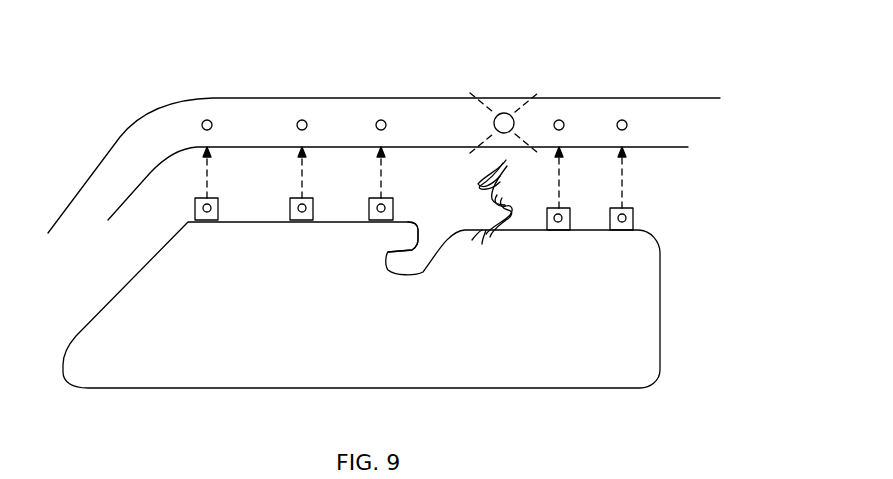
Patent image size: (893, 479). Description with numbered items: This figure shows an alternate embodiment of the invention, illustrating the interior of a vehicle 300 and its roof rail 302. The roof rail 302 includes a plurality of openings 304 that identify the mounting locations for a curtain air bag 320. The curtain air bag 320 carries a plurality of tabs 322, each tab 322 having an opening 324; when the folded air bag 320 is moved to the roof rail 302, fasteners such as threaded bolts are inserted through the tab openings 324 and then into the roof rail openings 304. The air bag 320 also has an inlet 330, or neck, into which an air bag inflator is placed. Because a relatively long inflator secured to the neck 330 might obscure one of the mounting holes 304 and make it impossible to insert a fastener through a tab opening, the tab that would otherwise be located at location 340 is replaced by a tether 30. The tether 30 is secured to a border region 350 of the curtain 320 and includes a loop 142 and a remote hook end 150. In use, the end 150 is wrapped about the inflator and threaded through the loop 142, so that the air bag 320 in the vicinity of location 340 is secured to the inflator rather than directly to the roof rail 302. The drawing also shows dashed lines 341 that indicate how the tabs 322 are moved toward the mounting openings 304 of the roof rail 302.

The vehicle 300 is at (690, 96).
The roof rail 302 is at (437, 107).
The openings 304 is at (207, 119).
The curtain air bag 320 is at (641, 289).
The tabs 322 is at (195, 210).
The opening 324 is at (205, 217).
The inlet 330 is at (413, 233).
The fastening direction 341 is at (627, 173).
The tether 30 is at (498, 213).
The remote end 150 is at (503, 163).
The loop 142 is at (503, 217).
The location 340 is at (487, 232).
The border region 350 is at (482, 230).